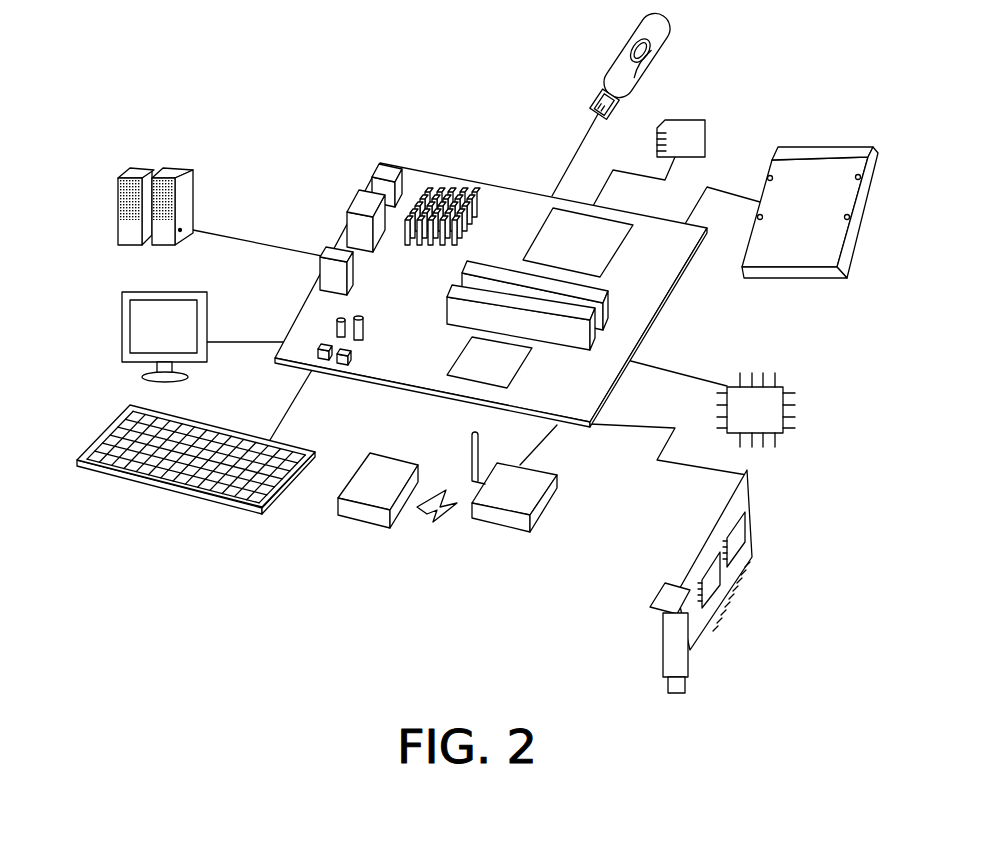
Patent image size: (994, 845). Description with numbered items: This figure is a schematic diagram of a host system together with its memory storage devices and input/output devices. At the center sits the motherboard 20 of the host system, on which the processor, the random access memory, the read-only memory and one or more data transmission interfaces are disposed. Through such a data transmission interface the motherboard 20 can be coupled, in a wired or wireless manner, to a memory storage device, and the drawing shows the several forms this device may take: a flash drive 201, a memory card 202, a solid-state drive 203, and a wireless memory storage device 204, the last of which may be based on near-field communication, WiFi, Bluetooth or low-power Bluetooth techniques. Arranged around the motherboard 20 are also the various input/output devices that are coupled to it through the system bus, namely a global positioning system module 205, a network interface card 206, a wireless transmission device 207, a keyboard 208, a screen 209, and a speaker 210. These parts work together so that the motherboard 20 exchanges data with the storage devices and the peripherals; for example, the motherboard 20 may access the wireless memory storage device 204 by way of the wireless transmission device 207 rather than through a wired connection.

The motherboard 20 is at (493, 202).
The flash drive 201 is at (611, 54).
The memory card 202 is at (706, 122).
The solid-state drive 203 is at (828, 146).
The wireless memory storage device 204 is at (350, 468).
The global positioning system module 205 is at (797, 406).
The network interface card 206 is at (752, 528).
The wireless transmission device 207 is at (553, 513).
The keyboard 208 is at (198, 495).
The screen 209 is at (122, 343).
The speaker 210 is at (117, 231).